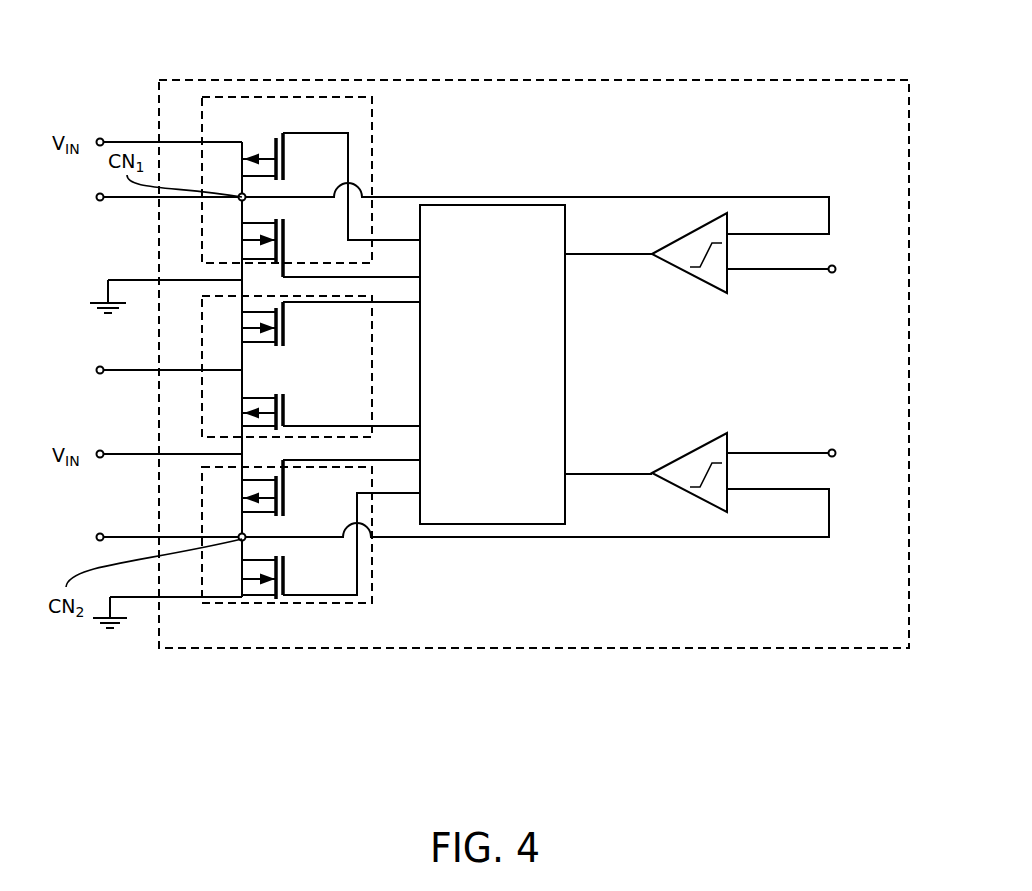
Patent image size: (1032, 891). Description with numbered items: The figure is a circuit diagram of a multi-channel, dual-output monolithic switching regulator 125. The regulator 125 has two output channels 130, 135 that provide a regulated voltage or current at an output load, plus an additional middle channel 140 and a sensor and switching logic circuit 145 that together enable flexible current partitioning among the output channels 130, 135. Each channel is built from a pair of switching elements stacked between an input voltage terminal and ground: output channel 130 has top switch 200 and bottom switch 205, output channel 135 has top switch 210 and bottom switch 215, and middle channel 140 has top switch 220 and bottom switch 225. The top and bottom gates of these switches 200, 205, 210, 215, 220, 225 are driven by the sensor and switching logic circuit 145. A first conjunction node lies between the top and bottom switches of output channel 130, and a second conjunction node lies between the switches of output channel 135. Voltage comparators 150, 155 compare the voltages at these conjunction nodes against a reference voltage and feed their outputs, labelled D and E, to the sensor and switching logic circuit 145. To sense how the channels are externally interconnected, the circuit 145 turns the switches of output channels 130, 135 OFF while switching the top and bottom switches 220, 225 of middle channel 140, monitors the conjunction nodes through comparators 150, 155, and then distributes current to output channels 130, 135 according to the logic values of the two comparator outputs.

The multi-channel monolithic switching regulator 125 is at (290, 78).
The output channel 130 is at (200, 202).
The output channel 135 is at (205, 537).
The middle channel 140 is at (200, 372).
The sensor and switching logic circuit 145 is at (565, 353).
The comparator 150 is at (708, 288).
The comparator 155 is at (703, 445).
The top switch 200 is at (263, 140).
The bottom switch 205 is at (242, 234).
The top switch 210 is at (242, 492).
The bottom switch 215 is at (265, 597).
The top switch 220 is at (242, 399).
The bottom switch 225 is at (242, 312).